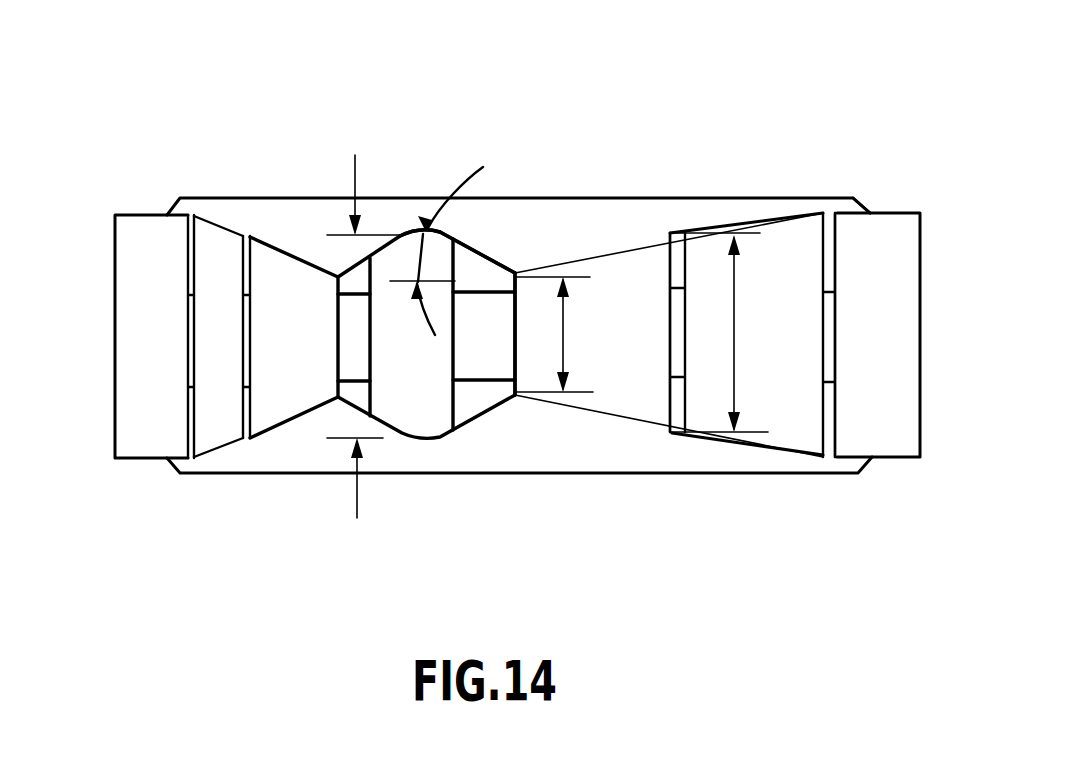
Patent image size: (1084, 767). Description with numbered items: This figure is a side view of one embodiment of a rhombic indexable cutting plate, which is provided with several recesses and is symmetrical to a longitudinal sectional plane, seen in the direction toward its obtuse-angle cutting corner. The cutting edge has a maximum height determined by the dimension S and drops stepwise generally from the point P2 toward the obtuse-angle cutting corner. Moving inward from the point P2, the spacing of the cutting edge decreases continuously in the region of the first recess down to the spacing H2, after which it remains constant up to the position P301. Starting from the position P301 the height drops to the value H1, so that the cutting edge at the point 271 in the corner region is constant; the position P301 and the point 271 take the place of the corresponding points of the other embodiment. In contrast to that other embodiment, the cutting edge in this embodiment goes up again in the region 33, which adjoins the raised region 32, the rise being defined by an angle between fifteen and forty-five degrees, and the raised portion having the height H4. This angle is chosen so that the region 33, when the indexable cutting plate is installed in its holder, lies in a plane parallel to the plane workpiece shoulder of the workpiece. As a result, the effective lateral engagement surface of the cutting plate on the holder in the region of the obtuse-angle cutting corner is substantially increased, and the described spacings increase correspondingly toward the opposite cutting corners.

The region 32 is at (443, 233).
The region 33 is at (488, 257).
The point 271 is at (517, 272).
The position P301 is at (670, 233).
The point P2 is at (833, 213).
The dimension S is at (832, 210).
The height H1 is at (565, 353).
The spacing H2 is at (733, 343).
The height H4 is at (363, 368).